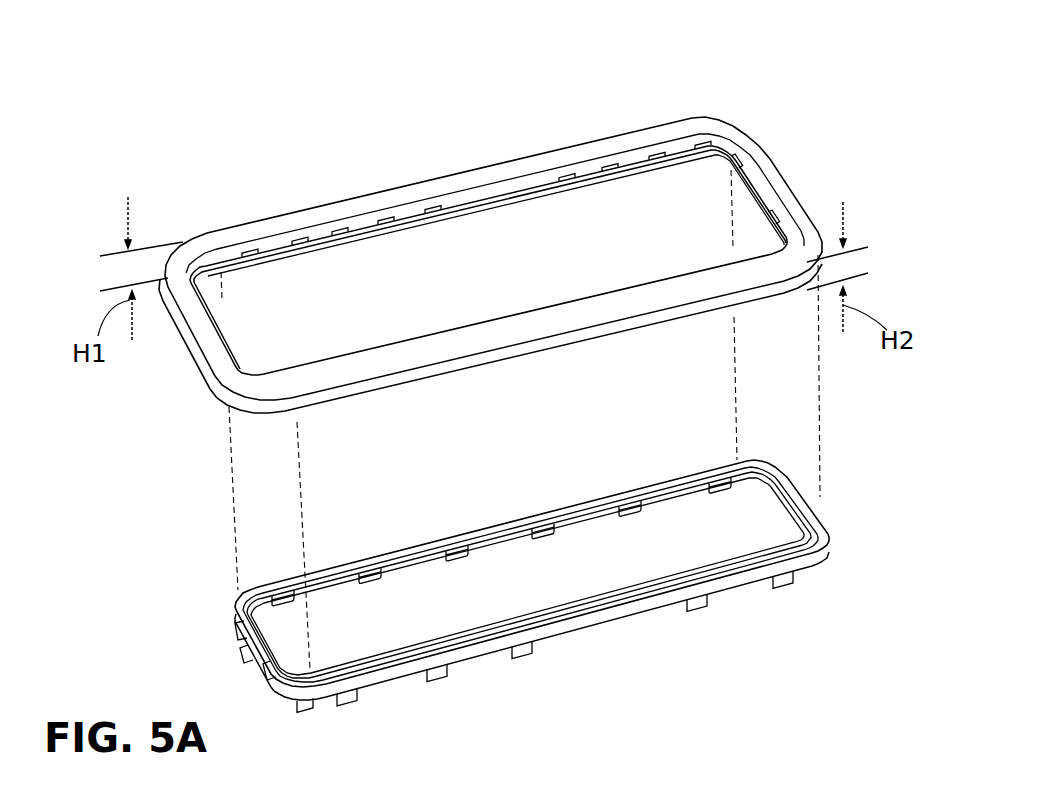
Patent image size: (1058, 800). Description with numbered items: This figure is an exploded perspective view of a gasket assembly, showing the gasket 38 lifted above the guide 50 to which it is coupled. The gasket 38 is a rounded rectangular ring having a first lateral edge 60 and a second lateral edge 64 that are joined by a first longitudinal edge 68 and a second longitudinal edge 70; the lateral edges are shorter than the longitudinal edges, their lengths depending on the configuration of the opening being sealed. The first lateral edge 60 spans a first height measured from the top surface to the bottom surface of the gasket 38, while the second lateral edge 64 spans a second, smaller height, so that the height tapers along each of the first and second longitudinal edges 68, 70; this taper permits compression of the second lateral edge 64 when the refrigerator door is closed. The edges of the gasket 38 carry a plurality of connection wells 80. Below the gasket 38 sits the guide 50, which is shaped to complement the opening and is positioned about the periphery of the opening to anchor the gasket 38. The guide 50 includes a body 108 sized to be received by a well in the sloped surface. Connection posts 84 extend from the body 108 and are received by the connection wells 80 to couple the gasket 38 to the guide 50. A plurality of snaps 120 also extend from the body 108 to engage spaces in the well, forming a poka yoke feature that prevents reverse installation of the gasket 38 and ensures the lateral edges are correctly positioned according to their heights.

The gasket 38 is at (719, 100).
The guide 50 is at (857, 489).
The first lateral edge 60 is at (228, 347).
The second lateral edge 64 is at (777, 186).
The first longitudinal edge 68 is at (449, 186).
The second longitudinal edge 70 is at (521, 328).
The connection wells 80 is at (749, 160).
The connection posts 84 is at (785, 484).
The body 108 is at (767, 460).
The snaps 120 is at (286, 597).